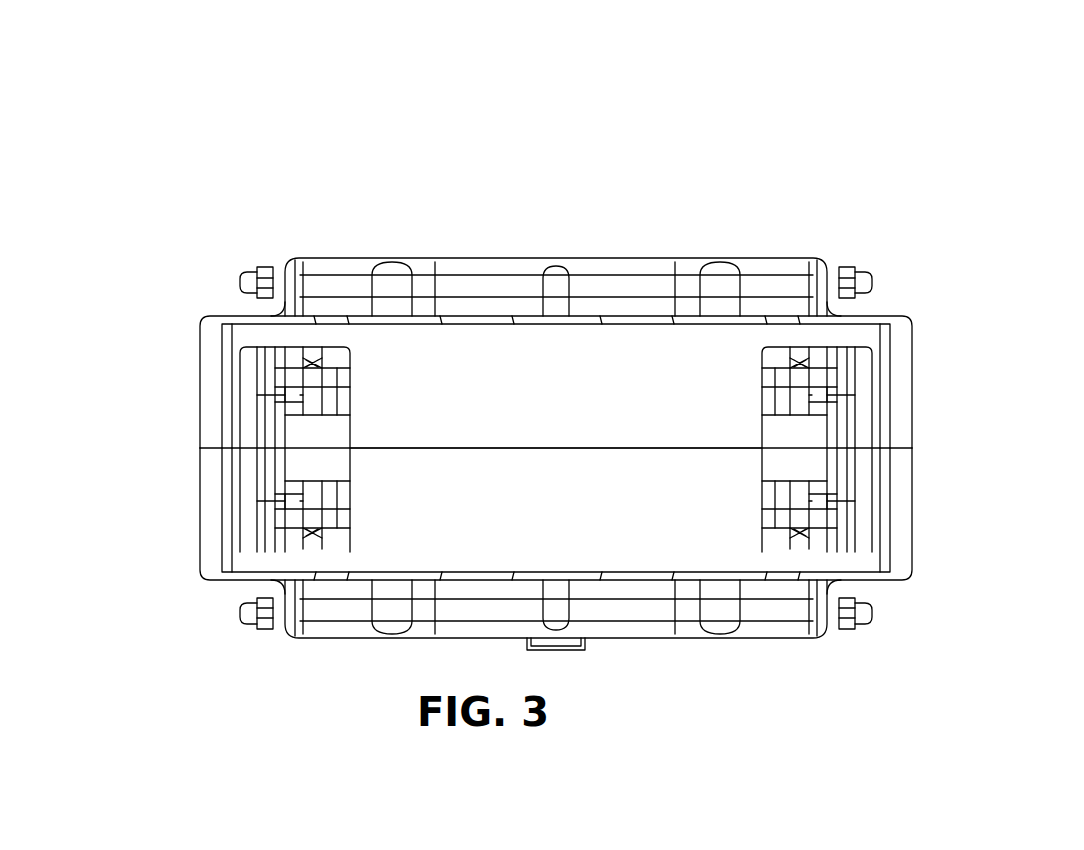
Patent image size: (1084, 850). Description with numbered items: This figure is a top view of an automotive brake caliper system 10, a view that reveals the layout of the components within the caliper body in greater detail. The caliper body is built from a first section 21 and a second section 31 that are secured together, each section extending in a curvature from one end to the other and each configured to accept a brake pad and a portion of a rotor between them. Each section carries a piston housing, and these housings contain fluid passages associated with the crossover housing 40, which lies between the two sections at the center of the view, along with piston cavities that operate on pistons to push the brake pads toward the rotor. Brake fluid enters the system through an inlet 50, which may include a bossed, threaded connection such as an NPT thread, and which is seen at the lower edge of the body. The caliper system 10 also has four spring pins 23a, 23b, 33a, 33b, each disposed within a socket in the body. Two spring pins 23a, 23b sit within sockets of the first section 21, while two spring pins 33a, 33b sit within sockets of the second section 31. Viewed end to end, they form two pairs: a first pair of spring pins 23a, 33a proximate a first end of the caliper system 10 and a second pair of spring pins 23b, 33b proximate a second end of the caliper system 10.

The automotive brake caliper system 10 is at (501, 416).
The first section 21 is at (161, 376).
The second section 31 is at (165, 504).
The spring pin 23a is at (298, 357).
The spring pin 23b is at (817, 357).
The spring pin 33a is at (297, 542).
The spring pin 33b is at (815, 542).
The crossover housing 40 is at (587, 380).
The inlet 50 is at (552, 642).